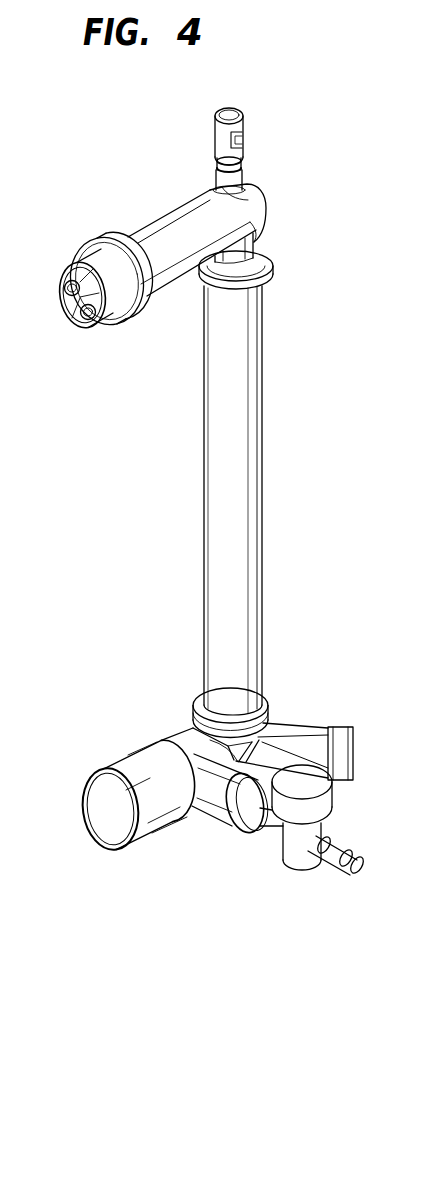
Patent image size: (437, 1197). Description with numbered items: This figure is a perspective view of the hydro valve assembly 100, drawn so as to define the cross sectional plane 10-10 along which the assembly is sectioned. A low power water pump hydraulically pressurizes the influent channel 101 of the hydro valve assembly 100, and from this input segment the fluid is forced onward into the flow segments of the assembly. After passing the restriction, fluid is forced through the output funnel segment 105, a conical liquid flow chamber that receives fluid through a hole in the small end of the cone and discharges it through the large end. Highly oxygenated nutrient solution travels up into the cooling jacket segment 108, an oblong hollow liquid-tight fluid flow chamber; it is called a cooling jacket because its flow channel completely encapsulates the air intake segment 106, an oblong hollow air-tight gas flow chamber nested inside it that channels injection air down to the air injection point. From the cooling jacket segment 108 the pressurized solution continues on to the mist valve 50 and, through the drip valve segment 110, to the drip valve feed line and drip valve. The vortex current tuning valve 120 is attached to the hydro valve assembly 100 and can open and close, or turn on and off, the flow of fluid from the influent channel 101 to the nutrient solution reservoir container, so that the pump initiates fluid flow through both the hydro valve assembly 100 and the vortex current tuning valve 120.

The cross sectional plane 10 is at (123, 822).
The mist valve 50 is at (245, 132).
The hydro valve assembly 100 is at (355, 220).
The influent channel 101 is at (108, 805).
The output funnel segment 105 is at (350, 763).
The air intake segment 106 is at (75, 327).
The cooling jacket segment 108 is at (263, 424).
The drip valve segment 110 is at (57, 291).
The vortex current tuning valve 120 is at (300, 853).